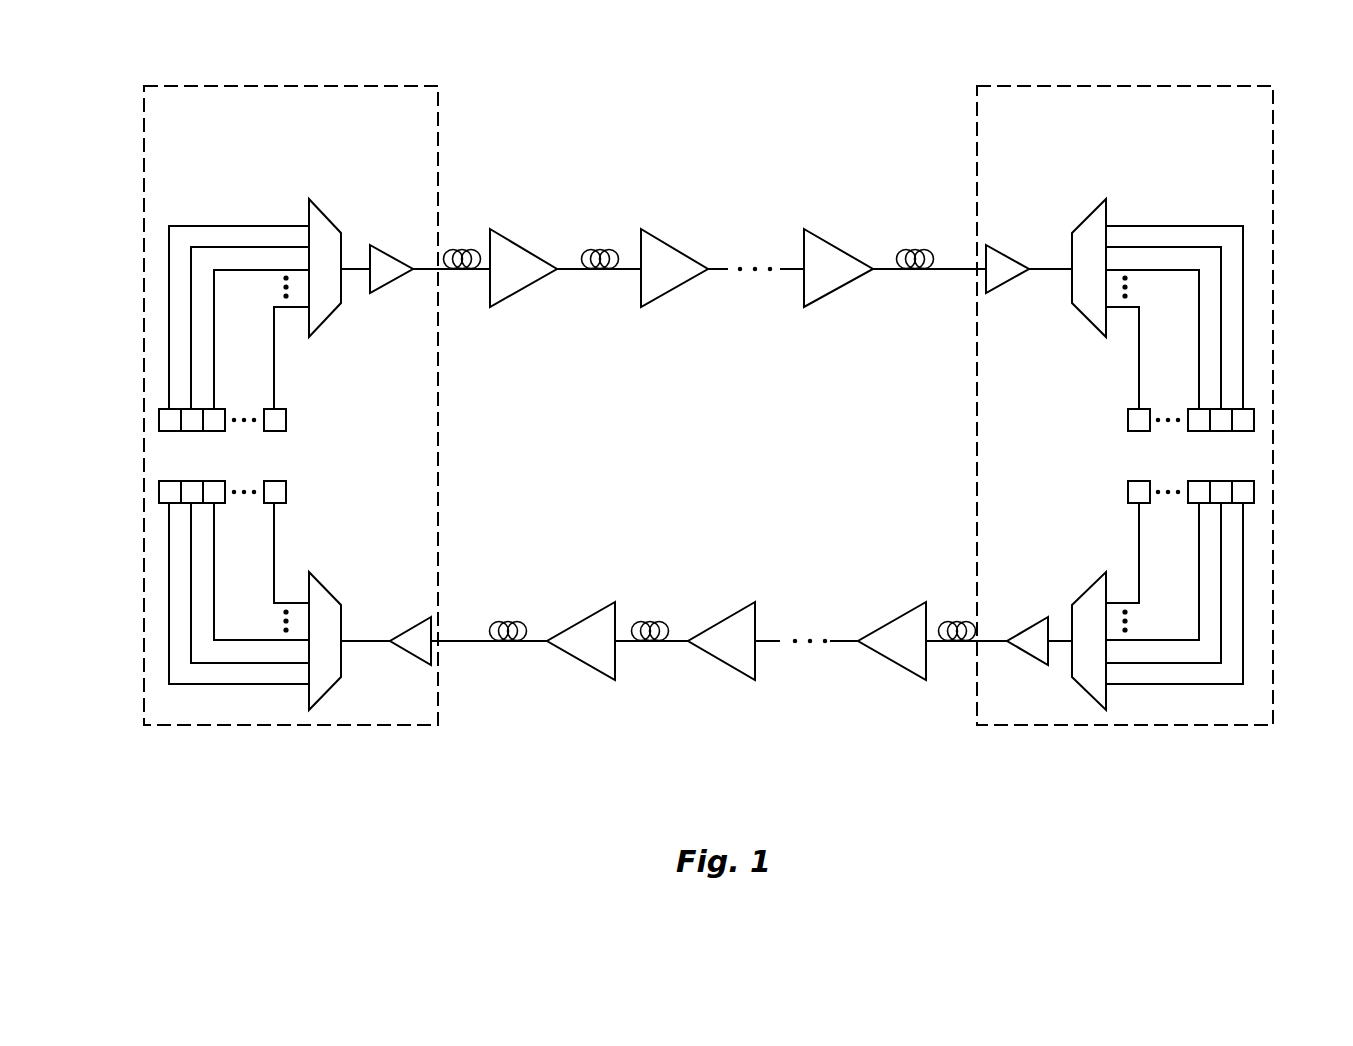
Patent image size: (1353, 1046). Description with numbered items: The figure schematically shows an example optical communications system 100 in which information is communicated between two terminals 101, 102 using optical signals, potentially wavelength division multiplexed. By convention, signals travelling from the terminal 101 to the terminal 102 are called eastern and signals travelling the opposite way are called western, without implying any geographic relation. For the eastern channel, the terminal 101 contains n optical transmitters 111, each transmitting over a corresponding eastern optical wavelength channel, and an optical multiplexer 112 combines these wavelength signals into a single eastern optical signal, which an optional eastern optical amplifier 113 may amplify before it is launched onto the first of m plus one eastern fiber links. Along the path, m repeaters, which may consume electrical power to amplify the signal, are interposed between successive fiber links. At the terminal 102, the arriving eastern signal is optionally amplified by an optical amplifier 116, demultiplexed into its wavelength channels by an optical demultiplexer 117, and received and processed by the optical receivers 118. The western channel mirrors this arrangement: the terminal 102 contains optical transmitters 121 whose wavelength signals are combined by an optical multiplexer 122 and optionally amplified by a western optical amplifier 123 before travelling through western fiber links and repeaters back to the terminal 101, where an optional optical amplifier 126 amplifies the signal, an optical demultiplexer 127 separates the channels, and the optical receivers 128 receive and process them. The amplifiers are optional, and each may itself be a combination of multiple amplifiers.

The optical communications system 100 is at (730, 51).
The terminal 101 is at (358, 125).
The terminal 102 is at (1193, 125).
The optical transmitters 111 is at (264, 406).
The optical multiplexer 112 is at (322, 213).
The eastern optical amplifier 113 is at (398, 258).
The optical amplifier 116 is at (1010, 258).
The optical demultiplexer 117 is at (1092, 213).
The optical receivers 118 is at (1152, 406).
The optical transmitters 121 is at (1140, 521).
The optical multiplexer 122 is at (1088, 589).
The western optical amplifier 123 is at (1025, 652).
The optical amplifier 126 is at (410, 653).
The optical demultiplexer 127 is at (325, 588).
The optical receivers 128 is at (252, 520).